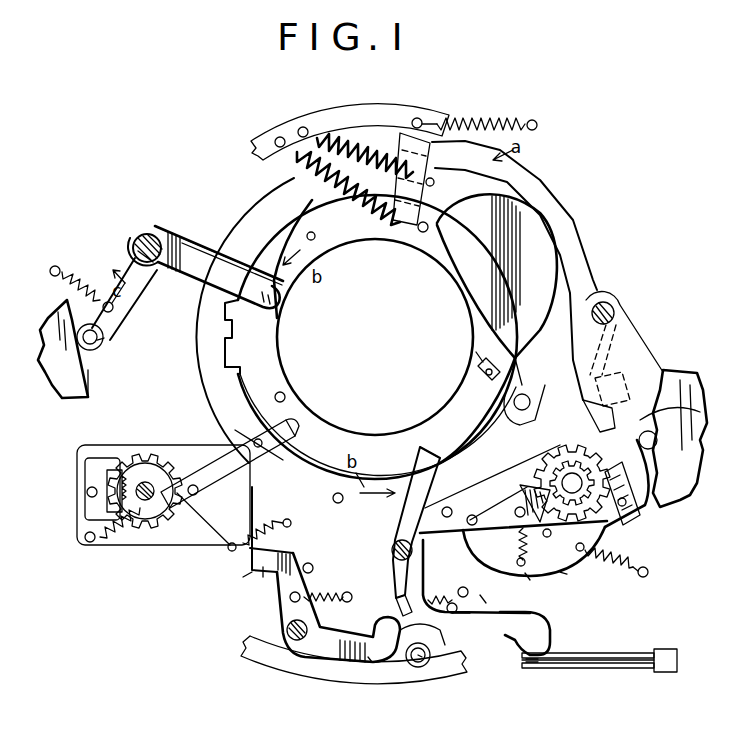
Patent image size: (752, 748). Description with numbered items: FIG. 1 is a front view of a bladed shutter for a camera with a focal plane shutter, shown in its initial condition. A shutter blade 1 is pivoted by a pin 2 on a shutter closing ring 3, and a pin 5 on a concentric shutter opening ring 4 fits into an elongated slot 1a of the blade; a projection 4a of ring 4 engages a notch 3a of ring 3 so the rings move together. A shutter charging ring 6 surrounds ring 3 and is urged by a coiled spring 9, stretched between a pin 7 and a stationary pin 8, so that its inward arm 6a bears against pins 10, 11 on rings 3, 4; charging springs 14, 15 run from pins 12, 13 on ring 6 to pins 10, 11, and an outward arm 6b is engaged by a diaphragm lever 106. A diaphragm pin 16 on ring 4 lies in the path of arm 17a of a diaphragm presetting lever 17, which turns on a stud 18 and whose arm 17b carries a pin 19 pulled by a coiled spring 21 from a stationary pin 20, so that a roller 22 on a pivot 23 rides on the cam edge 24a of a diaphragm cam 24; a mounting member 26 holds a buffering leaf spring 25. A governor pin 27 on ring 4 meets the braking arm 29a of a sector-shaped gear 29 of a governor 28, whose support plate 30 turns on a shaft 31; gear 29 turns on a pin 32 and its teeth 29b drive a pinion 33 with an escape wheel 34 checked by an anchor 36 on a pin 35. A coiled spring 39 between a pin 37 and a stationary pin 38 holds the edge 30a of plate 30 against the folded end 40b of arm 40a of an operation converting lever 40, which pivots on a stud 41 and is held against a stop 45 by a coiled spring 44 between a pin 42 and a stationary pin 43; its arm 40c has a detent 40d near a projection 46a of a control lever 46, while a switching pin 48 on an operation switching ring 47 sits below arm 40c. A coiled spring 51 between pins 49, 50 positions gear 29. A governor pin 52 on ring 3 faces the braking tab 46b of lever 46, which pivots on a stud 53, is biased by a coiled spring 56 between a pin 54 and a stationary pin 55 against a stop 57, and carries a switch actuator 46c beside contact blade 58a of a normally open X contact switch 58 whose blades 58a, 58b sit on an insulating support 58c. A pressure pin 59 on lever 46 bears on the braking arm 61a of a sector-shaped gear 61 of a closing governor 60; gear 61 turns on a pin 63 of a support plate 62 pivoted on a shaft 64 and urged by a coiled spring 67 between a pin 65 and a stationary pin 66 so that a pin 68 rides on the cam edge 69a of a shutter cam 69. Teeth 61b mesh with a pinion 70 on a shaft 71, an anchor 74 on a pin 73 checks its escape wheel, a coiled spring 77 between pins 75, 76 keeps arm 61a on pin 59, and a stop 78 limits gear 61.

The shutter blade 1 is at (470, 293).
The elongated slot 1a is at (491, 359).
The pin 2 is at (523, 393).
The shutter closing ring 3 is at (383, 487).
The notch 3a is at (225, 315).
The shutter opening ring 4 is at (343, 435).
The projection 4a is at (228, 358).
The pin 5 is at (480, 368).
The shutter charging ring 6 is at (565, 237).
The radially inwardly extending arm 6a is at (415, 152).
The radially outwardly extending arm 6b is at (613, 407).
The pin 7 is at (416, 118).
The stationary pin 8 is at (536, 129).
The coiled spring 9 is at (472, 119).
The pin 10 is at (433, 184).
The pin 11 is at (428, 229).
The pin 12 is at (301, 127).
The pin 13 is at (275, 138).
The shutter charging coiled spring 14 is at (340, 140).
The shutter charging coiled spring 15 is at (328, 181).
The diaphragm pin 16 is at (315, 233).
The diaphragm presetting lever 17 is at (203, 250).
The arm 17a is at (280, 304).
The arm 17b is at (103, 326).
The stud 18 is at (137, 237).
The pin 19 is at (106, 302).
The stationary pin 20 is at (50, 273).
The coiled spring 21 is at (72, 279).
The roller 22 is at (95, 342).
The pivot 23 is at (100, 341).
The diaphragm cam 24 is at (67, 398).
The cam edge 24a is at (90, 377).
The buffering leaf spring 25 is at (248, 263).
The mounting member 26 is at (168, 230).
The governor pin 27 is at (285, 394).
The governor 28 is at (145, 562).
The sector-shaped gear 29 is at (217, 457).
The braking arm 29a is at (293, 425).
The teeth 29b is at (187, 507).
The support plate 30 is at (173, 545).
The lateral edge 30a is at (243, 578).
The shaft 31 is at (137, 477).
The pin 32 is at (255, 440).
The pinion 33 is at (146, 468).
The escape wheel 34 is at (116, 466).
The pin 35 is at (87, 492).
The anchor 36 is at (88, 464).
The pin 37 is at (230, 551).
The stationary pin 38 is at (292, 523).
The coiled spring 39 is at (262, 533).
The operation converting lever 40 is at (313, 637).
The arm 40a is at (263, 568).
The folded end 40b is at (262, 546).
The arm 40c is at (368, 658).
The detent 40d is at (402, 627).
The stud 41 is at (293, 653).
The pin 42 is at (291, 600).
The stationary pin 43 is at (351, 595).
The coiled spring 44 is at (338, 594).
The stop 45 is at (311, 565).
The control lever 46 is at (403, 577).
The projection 46a is at (400, 594).
The braking tab 46b is at (447, 493).
The switch actuator 46c is at (550, 650).
The operation switching ring 47 is at (421, 668).
The switching pin 48 is at (424, 659).
The pin 49 is at (89, 543).
The pin 50 is at (198, 493).
The coiled spring 51 is at (123, 539).
The governor pin 52 is at (333, 497).
The stud 53 is at (393, 545).
The pin 54 is at (430, 598).
The stationary pin 55 is at (458, 607).
The coiled spring 56 is at (463, 587).
The stop 57 is at (470, 611).
The X contact switch 58 is at (622, 685).
The resilient contact blade 58a is at (588, 658).
The resilient contact blade 58b is at (550, 663).
The insulating support 58c is at (665, 664).
The pressure pin 59 is at (443, 509).
The governor 60 is at (639, 544).
The sector-shaped gear 61 is at (503, 520).
The braking arm 61a is at (428, 562).
The teeth 61b is at (528, 545).
The support plate 62 is at (567, 574).
The pin 63 is at (471, 515).
The shaft 64 is at (610, 303).
The pin 65 is at (585, 555).
The stationary pin 66 is at (646, 576).
The coiled spring 67 is at (613, 568).
The pin 68 is at (657, 441).
The shutter cam 69 is at (677, 377).
The cam edge 69a is at (673, 412).
The pinion 70 is at (517, 453).
The shaft 71 is at (581, 472).
The pin 73 is at (623, 498).
The anchor 74 is at (624, 520).
The pin 75 is at (477, 480).
The pin 76 is at (526, 574).
The coiled spring 77 is at (484, 598).
The stop 78 is at (520, 507).
The diaphragm lever 106 is at (617, 393).